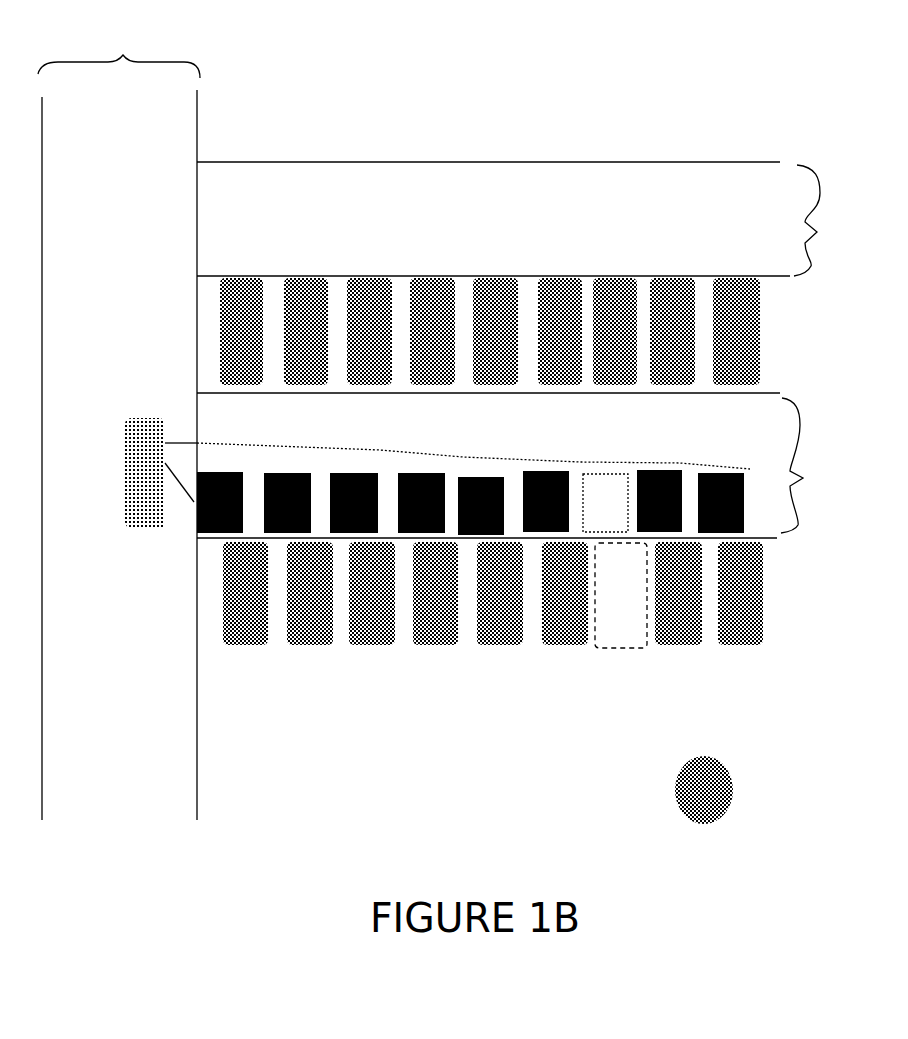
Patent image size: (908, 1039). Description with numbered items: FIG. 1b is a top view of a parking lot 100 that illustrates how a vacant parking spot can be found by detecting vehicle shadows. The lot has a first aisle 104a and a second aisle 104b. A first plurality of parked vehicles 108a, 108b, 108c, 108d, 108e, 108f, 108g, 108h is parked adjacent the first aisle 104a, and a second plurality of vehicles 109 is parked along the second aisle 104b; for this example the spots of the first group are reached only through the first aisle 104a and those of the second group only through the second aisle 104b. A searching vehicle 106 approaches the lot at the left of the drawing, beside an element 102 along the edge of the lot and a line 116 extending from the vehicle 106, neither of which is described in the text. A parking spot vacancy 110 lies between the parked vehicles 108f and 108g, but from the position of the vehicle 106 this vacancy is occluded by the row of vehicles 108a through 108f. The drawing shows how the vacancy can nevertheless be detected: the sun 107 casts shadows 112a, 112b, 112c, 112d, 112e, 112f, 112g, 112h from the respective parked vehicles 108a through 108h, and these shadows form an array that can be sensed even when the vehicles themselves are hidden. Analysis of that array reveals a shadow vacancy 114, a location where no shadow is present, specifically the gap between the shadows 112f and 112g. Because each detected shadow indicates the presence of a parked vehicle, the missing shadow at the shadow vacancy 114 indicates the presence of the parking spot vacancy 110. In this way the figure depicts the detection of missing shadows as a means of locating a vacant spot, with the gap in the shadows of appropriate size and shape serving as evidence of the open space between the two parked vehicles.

The parking lot 100 is at (794, 107).
The host connector / board 102 is at (119, 55).
The first aisle 104a is at (814, 465).
The second aisle 104b is at (830, 220).
The vehicle 106 is at (130, 421).
The sun 107 is at (730, 805).
The parked vehicle 108a is at (252, 645).
The parked vehicle 108b is at (318, 645).
The parked vehicle 108c is at (380, 645).
The parked vehicle 108d is at (444, 645).
The parked vehicle 108e is at (505, 645).
The parked vehicle 108f is at (570, 645).
The parked vehicle 108g is at (683, 645).
The parked vehicle 108h is at (745, 645).
The second plurality of vehicles 109 is at (737, 285).
The parking spot vacancy 110 is at (617, 645).
The shadow 112a is at (232, 470).
The shadow 112b is at (290, 472).
The shadow 112c is at (358, 472).
The shadow 112d is at (425, 472).
The shadow 112e is at (485, 476).
The shadow 112f is at (551, 470).
The shadow 112g is at (663, 469).
The shadow 112h is at (727, 472).
The shadow vacancy 114 is at (603, 473).
The host signal line 116 is at (196, 443).